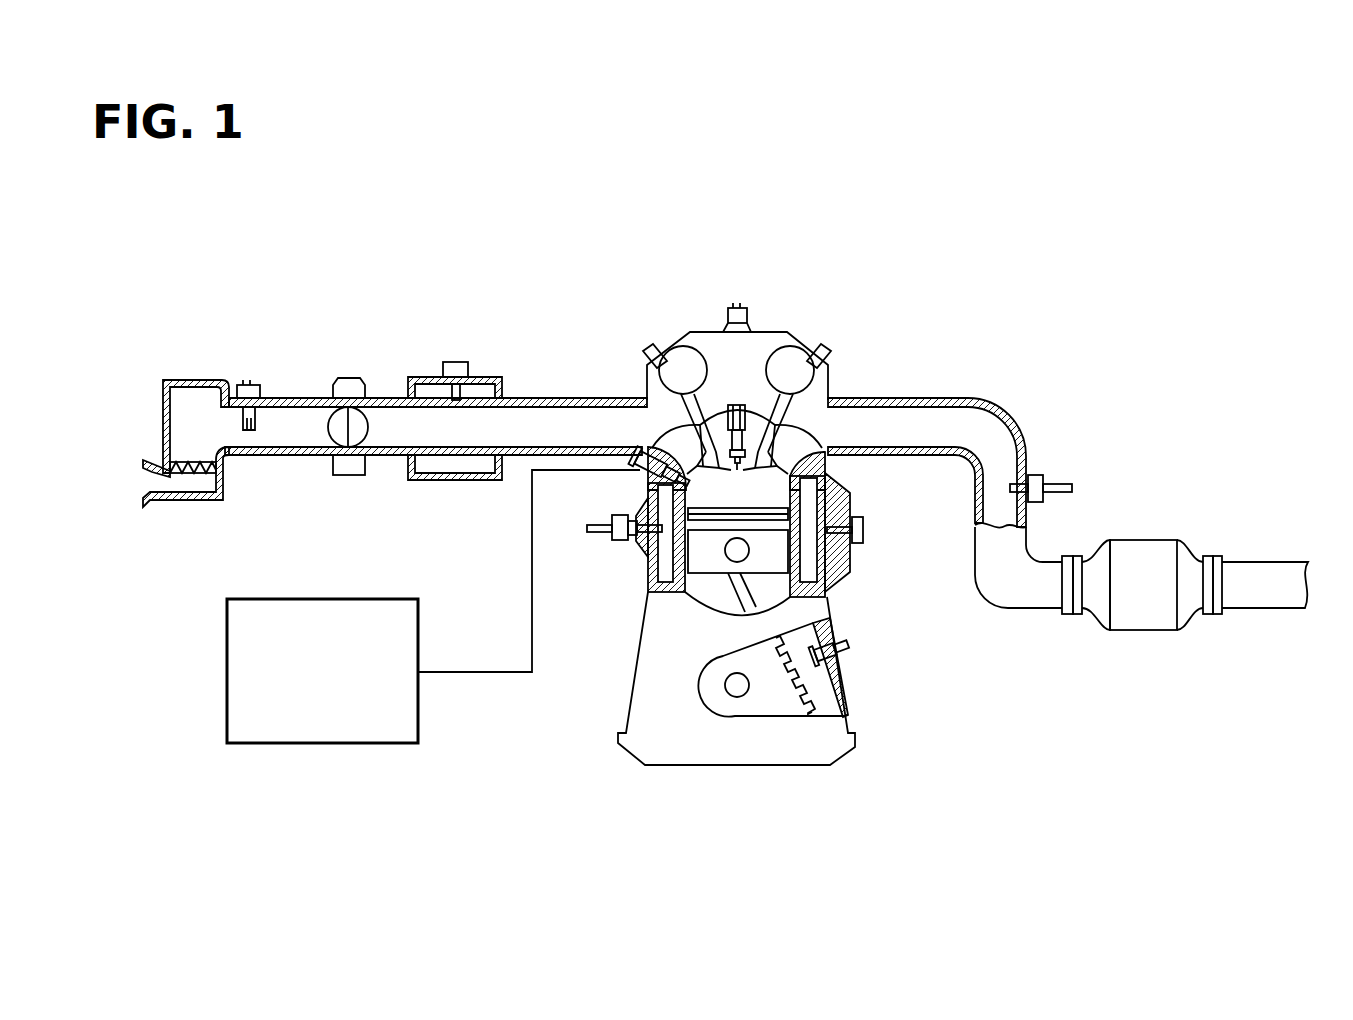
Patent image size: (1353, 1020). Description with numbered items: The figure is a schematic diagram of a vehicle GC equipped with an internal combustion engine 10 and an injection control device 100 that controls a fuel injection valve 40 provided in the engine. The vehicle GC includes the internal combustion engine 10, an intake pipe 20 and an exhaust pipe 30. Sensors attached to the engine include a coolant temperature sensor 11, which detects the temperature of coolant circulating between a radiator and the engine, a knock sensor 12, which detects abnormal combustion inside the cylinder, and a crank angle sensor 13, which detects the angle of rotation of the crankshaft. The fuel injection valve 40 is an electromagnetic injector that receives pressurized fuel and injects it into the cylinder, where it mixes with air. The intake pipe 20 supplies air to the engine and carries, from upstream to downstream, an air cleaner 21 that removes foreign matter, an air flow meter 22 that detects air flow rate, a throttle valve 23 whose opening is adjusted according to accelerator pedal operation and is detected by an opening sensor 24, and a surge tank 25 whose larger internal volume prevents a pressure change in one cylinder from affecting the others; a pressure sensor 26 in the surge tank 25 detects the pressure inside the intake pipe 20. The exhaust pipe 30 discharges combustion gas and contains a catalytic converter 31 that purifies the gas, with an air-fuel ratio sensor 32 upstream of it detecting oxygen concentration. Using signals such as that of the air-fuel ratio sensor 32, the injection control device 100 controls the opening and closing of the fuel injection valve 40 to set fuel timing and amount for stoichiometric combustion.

The vehicle GC is at (970, 332).
The internal combustion engine 10 is at (848, 572).
The coolant temperature sensor 11 is at (598, 545).
The knock sensor 12 is at (866, 528).
The crank angle sensor 13 is at (850, 653).
The intake pipe 20 is at (543, 400).
The air cleaner 21 is at (186, 476).
The air flow meter 22 is at (253, 384).
The throttle valve 23 is at (341, 430).
The opening sensor 24 is at (350, 476).
The surge tank 25 is at (456, 481).
The pressure sensor 26 is at (455, 361).
The exhaust pipe 30 is at (1020, 430).
The catalytic converter 31 is at (1152, 540).
The air-fuel ratio sensor 32 is at (1075, 485).
The fuel injection valve 40 is at (643, 477).
The injection control device 100 is at (420, 620).